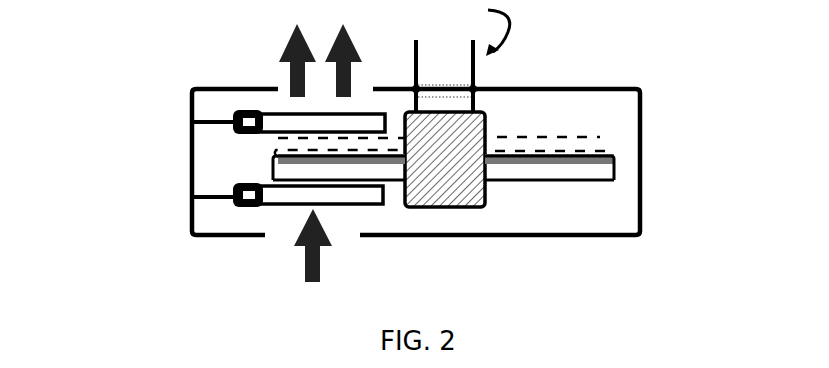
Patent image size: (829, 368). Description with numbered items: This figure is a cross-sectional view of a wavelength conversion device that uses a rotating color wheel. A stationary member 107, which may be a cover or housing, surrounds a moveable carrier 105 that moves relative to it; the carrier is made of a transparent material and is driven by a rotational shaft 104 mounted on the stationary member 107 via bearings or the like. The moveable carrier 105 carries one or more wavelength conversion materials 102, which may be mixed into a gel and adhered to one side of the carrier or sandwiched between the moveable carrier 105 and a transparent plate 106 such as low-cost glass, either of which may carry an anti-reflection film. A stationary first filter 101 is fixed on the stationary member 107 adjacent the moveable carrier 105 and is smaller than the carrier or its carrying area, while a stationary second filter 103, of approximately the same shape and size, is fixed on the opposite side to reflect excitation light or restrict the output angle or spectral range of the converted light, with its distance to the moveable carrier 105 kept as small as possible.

The first filter 101 is at (262, 193).
The wavelength conversion material 102 is at (614, 157).
The second filter 103 is at (258, 116).
The rotational shaft 104 is at (488, 114).
The moveable carrier 105 is at (597, 168).
The transparent plate 106 is at (600, 145).
The stationary member 107 is at (573, 237).